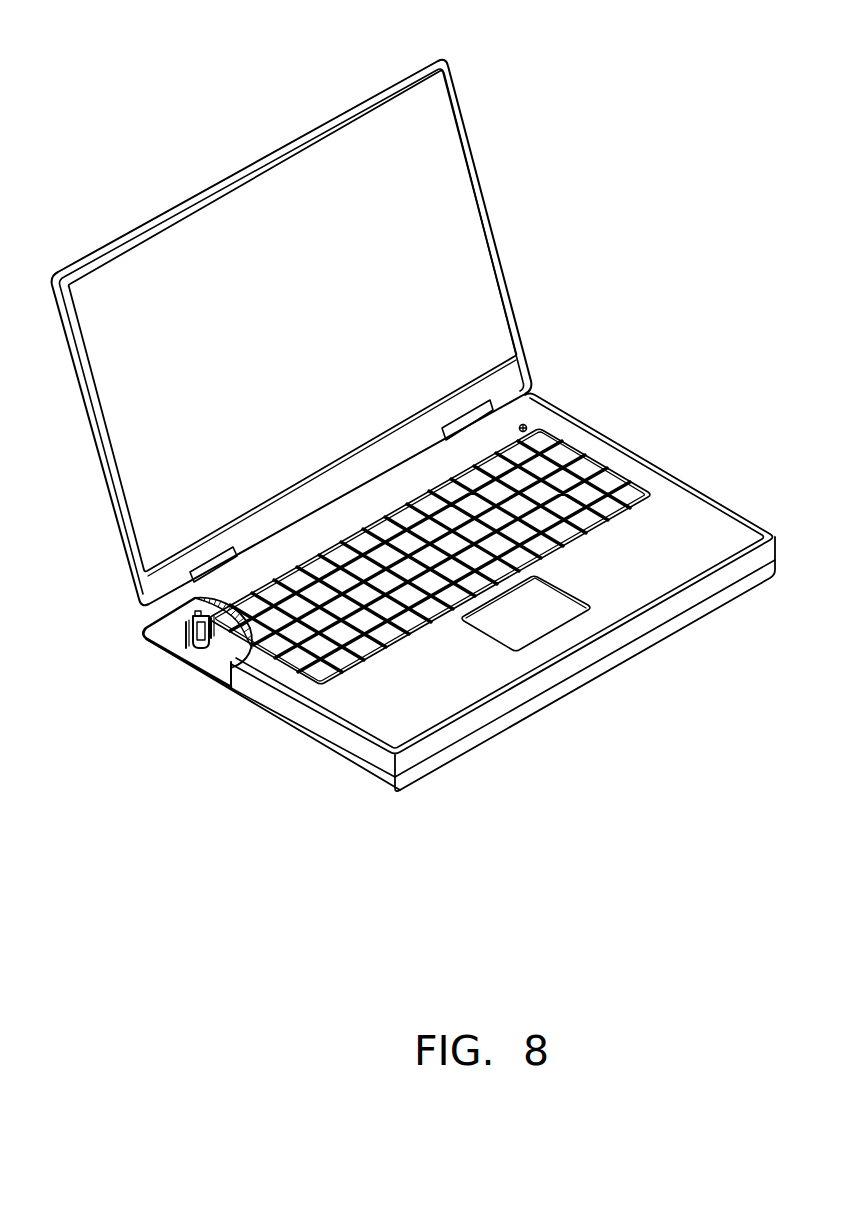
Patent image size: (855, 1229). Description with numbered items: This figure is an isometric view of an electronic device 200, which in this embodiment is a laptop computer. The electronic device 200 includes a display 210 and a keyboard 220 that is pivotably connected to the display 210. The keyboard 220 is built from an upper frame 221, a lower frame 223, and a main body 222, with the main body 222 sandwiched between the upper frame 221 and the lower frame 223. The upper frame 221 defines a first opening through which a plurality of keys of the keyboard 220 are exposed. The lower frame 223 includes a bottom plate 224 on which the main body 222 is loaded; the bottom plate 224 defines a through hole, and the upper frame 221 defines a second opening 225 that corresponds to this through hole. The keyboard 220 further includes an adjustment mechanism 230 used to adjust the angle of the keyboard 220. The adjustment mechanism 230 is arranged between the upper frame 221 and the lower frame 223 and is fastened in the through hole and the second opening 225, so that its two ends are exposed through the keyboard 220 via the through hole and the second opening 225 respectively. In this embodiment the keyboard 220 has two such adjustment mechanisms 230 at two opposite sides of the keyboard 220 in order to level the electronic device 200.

The electronic device 200 is at (566, 57).
The display 210 is at (455, 200).
The keyboard 220 is at (585, 440).
The upper frame 221 is at (290, 680).
The main body 222 is at (357, 652).
The lower frame 223 is at (213, 684).
The bottom plate 224 is at (198, 655).
The second opening 225 is at (526, 423).
The adjustment mechanism 230 is at (150, 652).